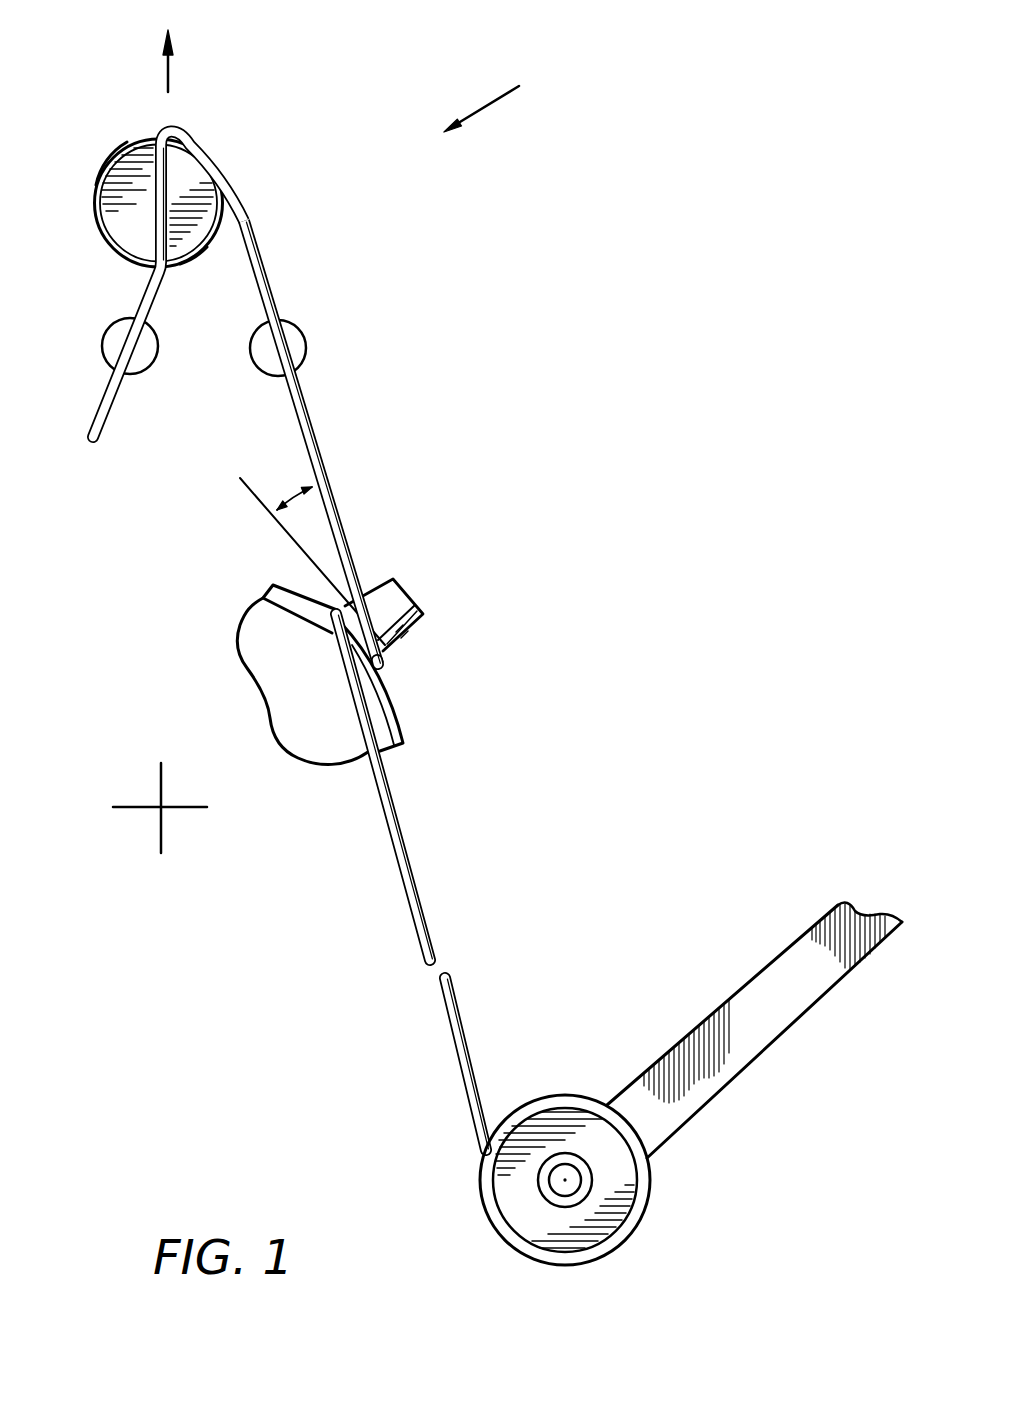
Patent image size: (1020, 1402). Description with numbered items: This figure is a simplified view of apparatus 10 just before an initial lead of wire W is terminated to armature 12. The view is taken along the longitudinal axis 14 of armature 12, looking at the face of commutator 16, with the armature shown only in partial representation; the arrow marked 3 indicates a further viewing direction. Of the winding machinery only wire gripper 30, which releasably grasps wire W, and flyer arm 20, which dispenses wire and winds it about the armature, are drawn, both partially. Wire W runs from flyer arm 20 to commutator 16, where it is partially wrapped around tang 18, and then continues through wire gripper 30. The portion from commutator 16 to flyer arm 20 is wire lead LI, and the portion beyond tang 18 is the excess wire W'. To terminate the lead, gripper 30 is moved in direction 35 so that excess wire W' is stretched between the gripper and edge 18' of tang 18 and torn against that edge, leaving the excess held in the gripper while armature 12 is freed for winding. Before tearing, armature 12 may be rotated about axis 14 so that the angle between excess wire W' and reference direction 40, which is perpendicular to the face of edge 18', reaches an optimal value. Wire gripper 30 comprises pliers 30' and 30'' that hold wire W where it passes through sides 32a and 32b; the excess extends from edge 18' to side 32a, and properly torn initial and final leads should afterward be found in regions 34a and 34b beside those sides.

The apparatus 10 is at (664, 158).
The viewing direction arrow 3 is at (505, 100).
The armature 12 is at (258, 623).
The longitudinal axis 14 is at (157, 812).
The commutator 16 is at (391, 720).
The tang 18 is at (409, 609).
The edge of tang 18' is at (432, 638).
The flyer arm 20 is at (695, 1027).
The wire gripper 30 is at (141, 208).
The plier 30' is at (98, 144).
The plier 30'' is at (204, 277).
The side of wire gripper 32a is at (178, 117).
The side of wire gripper 32b is at (168, 300).
The region 34a is at (306, 350).
The region 34b is at (103, 338).
The direction 35 is at (168, 80).
The reference direction 40 is at (295, 542).
The wire W is at (415, 882).
The excess wire W' is at (275, 404).
The wire lead LI is at (395, 817).